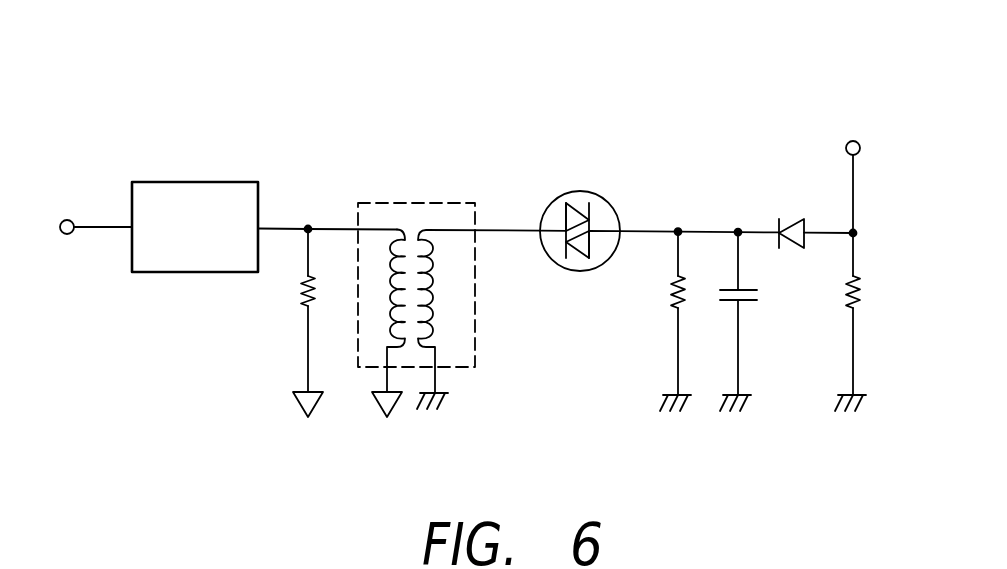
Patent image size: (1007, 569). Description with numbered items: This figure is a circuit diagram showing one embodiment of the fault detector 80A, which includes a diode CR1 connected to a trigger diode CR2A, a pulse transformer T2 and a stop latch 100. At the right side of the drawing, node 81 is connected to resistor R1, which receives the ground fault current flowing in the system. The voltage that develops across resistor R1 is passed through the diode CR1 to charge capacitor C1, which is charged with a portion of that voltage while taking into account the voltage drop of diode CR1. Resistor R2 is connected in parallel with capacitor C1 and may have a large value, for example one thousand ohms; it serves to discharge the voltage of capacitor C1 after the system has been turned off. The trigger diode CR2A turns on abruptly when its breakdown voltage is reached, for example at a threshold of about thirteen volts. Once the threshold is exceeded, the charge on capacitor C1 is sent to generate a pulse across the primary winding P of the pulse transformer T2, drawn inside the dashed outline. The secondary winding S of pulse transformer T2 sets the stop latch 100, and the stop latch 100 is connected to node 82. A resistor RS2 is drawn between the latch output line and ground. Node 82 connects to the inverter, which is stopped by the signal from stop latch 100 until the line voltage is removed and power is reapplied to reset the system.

The node 82 is at (60, 223).
The stop latch 100 is at (188, 182).
The node 81 is at (855, 141).
The fault detector 80A is at (613, 80).
The pulse transformer T2 is at (412, 203).
The trigger diode CR2A is at (592, 194).
The diode CR1 is at (815, 210).
The resistor R2 is at (655, 321).
The capacitor C1 is at (760, 321).
The resistor R1 is at (869, 322).
The resistor RS2 is at (281, 323).